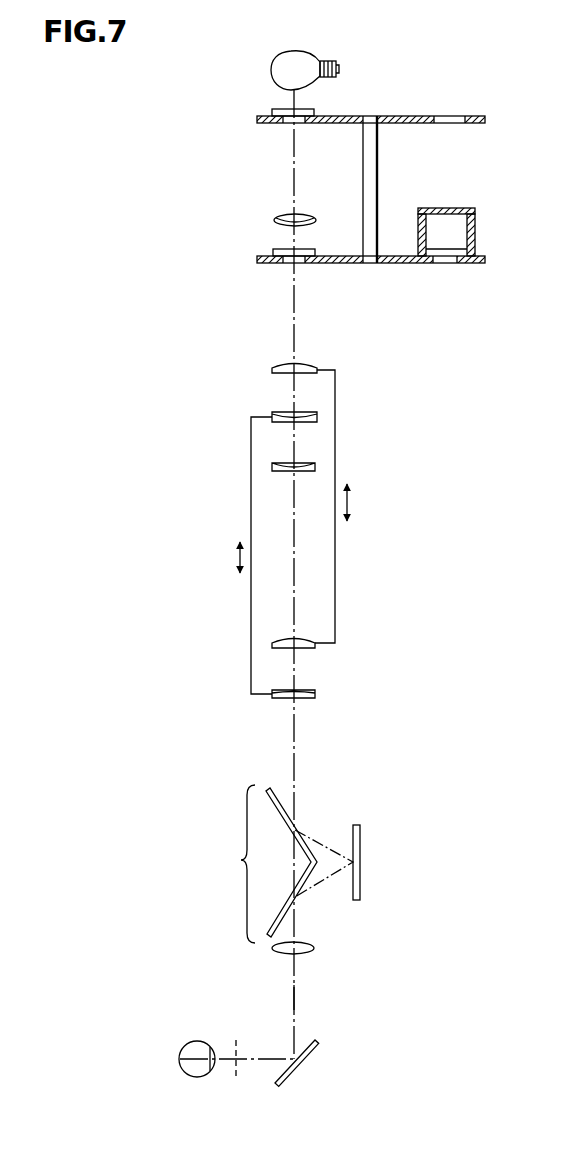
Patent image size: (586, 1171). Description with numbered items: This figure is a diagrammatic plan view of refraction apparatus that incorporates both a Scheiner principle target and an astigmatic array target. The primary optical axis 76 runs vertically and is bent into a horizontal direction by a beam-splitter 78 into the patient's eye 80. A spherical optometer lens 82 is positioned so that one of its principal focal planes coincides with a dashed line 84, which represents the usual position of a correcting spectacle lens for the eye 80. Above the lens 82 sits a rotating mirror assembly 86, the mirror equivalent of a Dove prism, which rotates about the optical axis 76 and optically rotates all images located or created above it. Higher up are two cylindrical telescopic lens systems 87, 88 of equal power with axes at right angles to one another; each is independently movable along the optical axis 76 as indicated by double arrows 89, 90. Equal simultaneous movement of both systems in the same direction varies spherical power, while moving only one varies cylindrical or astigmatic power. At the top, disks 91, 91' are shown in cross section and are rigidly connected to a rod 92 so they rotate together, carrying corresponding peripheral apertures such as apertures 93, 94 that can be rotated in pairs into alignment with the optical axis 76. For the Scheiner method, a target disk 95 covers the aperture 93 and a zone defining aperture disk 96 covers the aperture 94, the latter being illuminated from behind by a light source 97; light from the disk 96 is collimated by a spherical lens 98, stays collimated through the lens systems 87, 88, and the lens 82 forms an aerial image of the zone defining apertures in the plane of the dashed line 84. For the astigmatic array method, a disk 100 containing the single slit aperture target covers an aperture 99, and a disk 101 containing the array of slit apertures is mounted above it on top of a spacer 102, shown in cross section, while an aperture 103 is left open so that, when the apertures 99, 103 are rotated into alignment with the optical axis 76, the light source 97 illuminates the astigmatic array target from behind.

The light source 97 is at (277, 69).
The zone defining aperture disk 96 is at (278, 110).
The aperture 94 is at (288, 118).
The disk 91' is at (371, 105).
The aperture 103 is at (455, 122).
The rod 92 is at (372, 177).
The spherical lens 98 is at (283, 217).
The target disk 95 is at (280, 248).
The aperture 93 is at (288, 263).
The disk 91 is at (371, 243).
The disk 101 is at (468, 208).
The spacer 102 is at (474, 234).
The aperture 99 is at (442, 263).
The disk 100 is at (455, 252).
The double arrow 90 is at (350, 502).
The double arrow 89 is at (236, 556).
The lens system 88 is at (335, 560).
The lens system 87 is at (251, 606).
The rotating mirror assembly 86 is at (289, 864).
The lens 82 is at (308, 945).
The primary optical axis 76 is at (295, 990).
The beam-splitter 78 is at (317, 1052).
The dashed line 84 is at (238, 1067).
The patient's eye 80 is at (195, 1076).